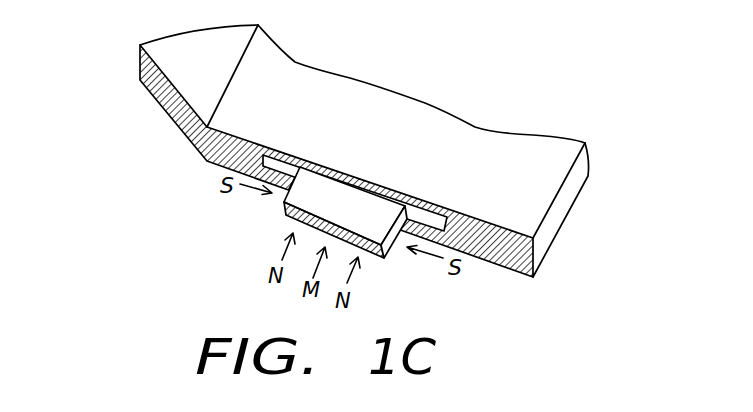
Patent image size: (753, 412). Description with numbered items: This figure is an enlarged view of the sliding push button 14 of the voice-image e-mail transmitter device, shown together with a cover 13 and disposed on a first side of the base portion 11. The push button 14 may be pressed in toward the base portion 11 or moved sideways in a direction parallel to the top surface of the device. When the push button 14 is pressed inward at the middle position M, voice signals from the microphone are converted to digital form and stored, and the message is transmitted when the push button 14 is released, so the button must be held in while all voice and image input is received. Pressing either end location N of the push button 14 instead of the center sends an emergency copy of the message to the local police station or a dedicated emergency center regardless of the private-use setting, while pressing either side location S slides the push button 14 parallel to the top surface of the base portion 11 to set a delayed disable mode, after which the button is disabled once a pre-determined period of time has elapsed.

The base portion 11 is at (545, 235).
The Cover 13 is at (173, 118).
The sliding push button 14 is at (358, 198).